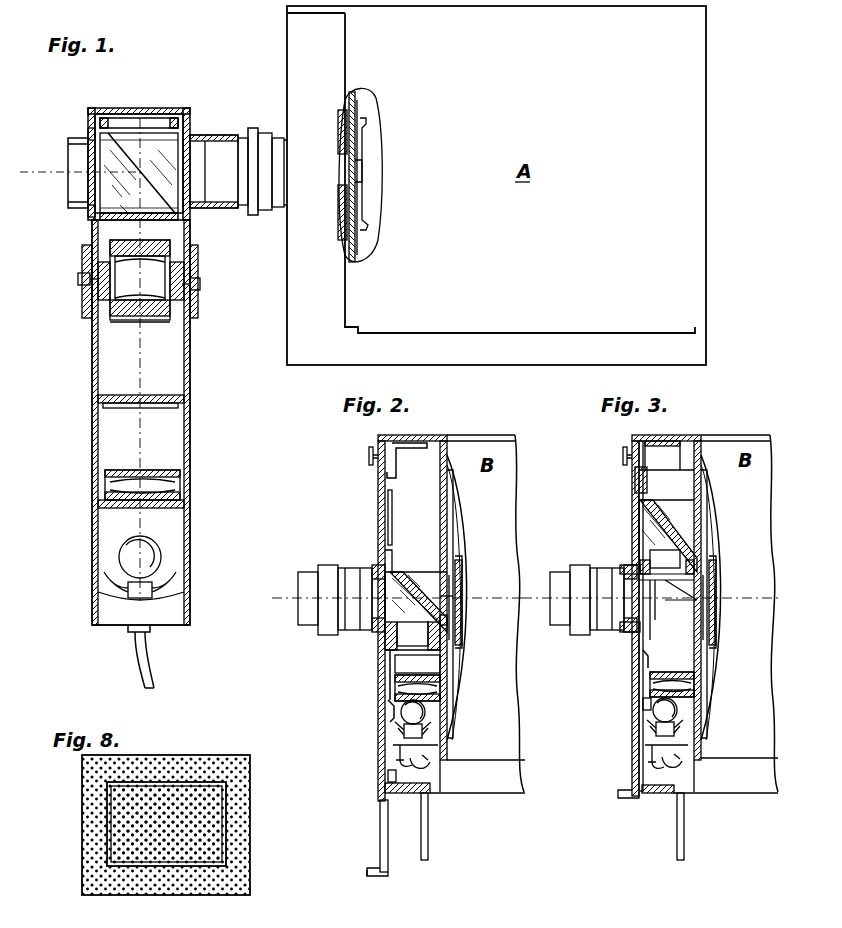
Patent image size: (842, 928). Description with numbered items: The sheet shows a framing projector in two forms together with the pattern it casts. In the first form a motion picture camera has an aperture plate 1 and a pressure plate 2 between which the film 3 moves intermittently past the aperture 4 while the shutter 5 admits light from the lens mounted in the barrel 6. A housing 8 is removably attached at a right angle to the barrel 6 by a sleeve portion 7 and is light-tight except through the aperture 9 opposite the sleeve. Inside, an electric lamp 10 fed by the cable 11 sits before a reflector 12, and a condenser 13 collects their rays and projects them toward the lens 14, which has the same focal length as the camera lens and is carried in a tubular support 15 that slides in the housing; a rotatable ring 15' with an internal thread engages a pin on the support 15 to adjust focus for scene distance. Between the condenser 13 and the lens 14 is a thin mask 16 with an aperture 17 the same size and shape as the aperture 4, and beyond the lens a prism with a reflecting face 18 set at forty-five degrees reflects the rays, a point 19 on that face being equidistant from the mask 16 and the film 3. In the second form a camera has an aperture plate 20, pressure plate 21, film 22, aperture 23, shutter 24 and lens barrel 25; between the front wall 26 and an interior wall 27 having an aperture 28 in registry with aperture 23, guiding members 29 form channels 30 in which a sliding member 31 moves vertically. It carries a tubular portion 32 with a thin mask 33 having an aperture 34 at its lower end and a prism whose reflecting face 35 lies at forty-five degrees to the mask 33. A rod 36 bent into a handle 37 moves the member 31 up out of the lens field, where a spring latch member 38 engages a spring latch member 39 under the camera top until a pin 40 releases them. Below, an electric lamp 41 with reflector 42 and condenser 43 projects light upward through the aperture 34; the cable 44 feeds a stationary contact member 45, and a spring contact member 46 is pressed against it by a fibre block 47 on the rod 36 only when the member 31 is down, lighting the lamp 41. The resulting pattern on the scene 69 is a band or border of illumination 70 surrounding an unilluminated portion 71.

In FIG. 1, the aperture plate 1 is at (358, 102).
In FIG. 1, the pressure plate 2 is at (367, 127).
In FIG. 1, the film 3 is at (362, 108).
In FIG. 1, the aperture 4 is at (360, 176).
In FIG. 1, the shutter 5 is at (338, 138).
In FIG. 1, the lens barrel 6 is at (250, 128).
In FIG. 1, the sleeve portion 7 is at (198, 136).
In FIG. 1, the housing 8 is at (92, 350).
In FIG. 1, the aperture 9 is at (68, 160).
In FIG. 1, the electric lamp 10 is at (150, 556).
In FIG. 1, the cable 11 is at (150, 662).
In FIG. 1, the reflector 12 is at (165, 588).
In FIG. 1, the condenser 13 is at (165, 488).
In FIG. 1, the lens 14 is at (150, 282).
In FIG. 1, the tubular support 15 is at (211, 289).
In FIG. 1, the rotatable ring 15' is at (57, 280).
In FIG. 1, the mask 16 is at (165, 400).
In FIG. 1, the aperture 17 is at (133, 396).
In FIG. 1, the reflecting face 18 is at (148, 193).
In FIG. 1, the point 19 is at (150, 158).
In FIG. 2, the aperture plate 20 is at (450, 572).
In FIG. 3, the aperture plate 20 is at (706, 568).
In FIG. 2, the pressure plate 21 is at (465, 566).
In FIG. 3, the pressure plate 21 is at (719, 568).
In FIG. 2, the film 22 is at (470, 545).
In FIG. 3, the film 22 is at (722, 548).
In FIG. 2, the aperture 23 is at (452, 590).
In FIG. 3, the aperture 23 is at (706, 594).
In FIG. 2, the shutter 24 is at (452, 552).
In FIG. 3, the shutter 24 is at (706, 552).
In FIG. 2, the lens barrel 25 is at (340, 565).
In FIG. 3, the lens barrel 25 is at (590, 565).
In FIG. 2, the front wall 26 is at (378, 488).
In FIG. 3, the front wall 26 is at (632, 488).
In FIG. 2, the interior wall 27 is at (440, 490).
In FIG. 3, the interior wall 27 is at (702, 474).
In FIG. 2, the aperture 28 is at (455, 596).
In FIG. 3, the aperture 28 is at (694, 610).
In FIG. 2, the guiding members 29 is at (388, 712).
In FIG. 3, the guiding members 29 is at (640, 658).
In FIG. 2, the channels or grooves 30 is at (388, 512).
In FIG. 2, the sliding member 31 is at (450, 618).
In FIG. 3, the sliding member 31 is at (642, 562).
In FIG. 2, the tubular portion 32 is at (395, 650).
In FIG. 3, the tubular portion 32 is at (650, 570).
In FIG. 2, the mask 33 is at (392, 655).
In FIG. 3, the mask 33 is at (650, 610).
In FIG. 2, the aperture 34 is at (416, 648).
In FIG. 3, the aperture 34 is at (662, 580).
In FIG. 2, the reflecting face 35 is at (412, 598).
In FIG. 3, the reflecting face 35 is at (640, 522).
In FIG. 2, the rod 36 is at (378, 747).
In FIG. 3, the rod 36 is at (632, 730).
In FIG. 2, the handle 37 is at (367, 874).
In FIG. 3, the handle 37 is at (620, 798).
In FIG. 2, the spring latch member 38 is at (390, 562).
In FIG. 3, the spring latch member 38 is at (646, 490).
In FIG. 2, the spring latch member 39 is at (390, 482).
In FIG. 3, the spring latch member 39 is at (652, 470).
In FIG. 2, the pin 40 is at (372, 447).
In FIG. 3, the pin 40 is at (625, 450).
In FIG. 2, the electric lamp 41 is at (430, 715).
In FIG. 3, the electric lamp 41 is at (682, 710).
In FIG. 2, the reflector 42 is at (428, 732).
In FIG. 3, the reflector 42 is at (683, 728).
In FIG. 2, the condenser 43 is at (445, 688).
In FIG. 3, the condenser 43 is at (680, 683).
In FIG. 2, the cable 44 is at (428, 832).
In FIG. 3, the cable 44 is at (684, 835).
In FIG. 2, the stationary contact member 45 is at (433, 772).
In FIG. 3, the stationary contact member 45 is at (684, 770).
In FIG. 2, the spring contact member 46 is at (400, 760).
In FIG. 3, the spring contact member 46 is at (650, 763).
In FIG. 2, the block 47 is at (390, 780).
In FIG. 3, the block 47 is at (640, 703).
In FIG. 8, the scene 69 is at (240, 770).
In FIG. 8, the band or border of illumination 70 is at (222, 796).
In FIG. 8, the unilluminated portion of the scene 71 is at (210, 828).